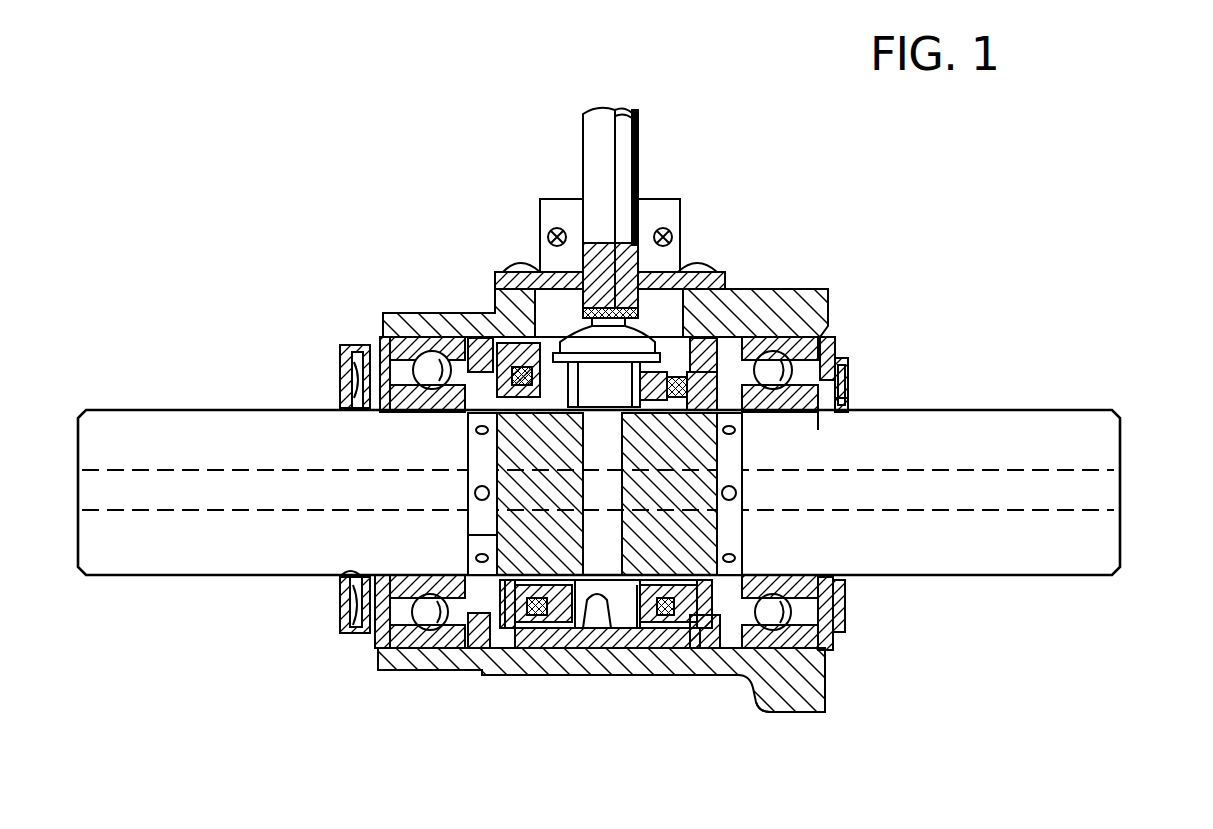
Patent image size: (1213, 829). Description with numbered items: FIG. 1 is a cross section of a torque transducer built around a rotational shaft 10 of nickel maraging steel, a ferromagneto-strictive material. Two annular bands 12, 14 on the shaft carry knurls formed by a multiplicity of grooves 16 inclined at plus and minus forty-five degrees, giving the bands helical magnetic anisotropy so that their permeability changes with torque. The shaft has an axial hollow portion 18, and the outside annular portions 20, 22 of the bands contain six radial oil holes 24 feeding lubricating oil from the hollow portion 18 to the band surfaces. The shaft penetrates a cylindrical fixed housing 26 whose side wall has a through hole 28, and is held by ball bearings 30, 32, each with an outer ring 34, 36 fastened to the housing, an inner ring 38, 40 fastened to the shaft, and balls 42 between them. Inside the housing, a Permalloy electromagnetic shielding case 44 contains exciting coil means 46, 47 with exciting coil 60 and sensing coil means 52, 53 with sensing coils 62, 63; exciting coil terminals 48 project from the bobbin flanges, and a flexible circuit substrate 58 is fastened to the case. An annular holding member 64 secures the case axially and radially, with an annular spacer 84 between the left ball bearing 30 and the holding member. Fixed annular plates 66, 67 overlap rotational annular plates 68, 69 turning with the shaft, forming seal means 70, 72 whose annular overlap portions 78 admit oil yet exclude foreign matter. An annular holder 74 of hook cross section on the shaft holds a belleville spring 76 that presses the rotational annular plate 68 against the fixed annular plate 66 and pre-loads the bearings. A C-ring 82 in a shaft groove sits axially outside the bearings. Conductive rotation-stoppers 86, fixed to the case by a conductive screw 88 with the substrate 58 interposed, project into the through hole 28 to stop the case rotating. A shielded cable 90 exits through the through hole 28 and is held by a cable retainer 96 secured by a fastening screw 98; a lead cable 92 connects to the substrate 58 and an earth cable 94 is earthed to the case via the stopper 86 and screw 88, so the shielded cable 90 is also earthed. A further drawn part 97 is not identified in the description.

The rotational shaft 10 is at (1033, 576).
The annular band 12 is at (440, 466).
The annular band 14 is at (825, 497).
The grooves 16 is at (500, 463).
The hollow portion 18 is at (1057, 478).
The annular portion 20 is at (470, 535).
The annular portion 22 is at (730, 533).
The oil holes 24 is at (820, 490).
The fixed housing 26 is at (783, 292).
The through hole 28 is at (690, 327).
The ball bearing 30 is at (407, 569).
The ball bearing 32 is at (732, 653).
The outer ring 34 is at (423, 643).
The outer ring 36 is at (781, 652).
The inner ring 38 is at (380, 670).
The inner ring 40 is at (823, 670).
The balls 42 is at (403, 650).
The electromagnetic shielding case 44 is at (813, 310).
The exciting coil means 46 is at (541, 570).
The exciting coil means 47 is at (612, 630).
The exciting coil terminals 48 is at (490, 303).
The sensing coil means 52 is at (535, 625).
The sensing coil means 53 is at (672, 620).
The flexible circuit substrate 58 is at (493, 272).
The exciting coil 60 is at (585, 630).
The sensing coil 62 is at (560, 625).
The sensing coil 63 is at (850, 400).
The annular holding member 64 is at (478, 305).
The fixed annular plate 66 is at (377, 643).
The fixed annular plate 67 is at (833, 645).
The rotational annular plate 68 is at (357, 572).
The rotational annular plate 69 is at (845, 605).
The seal means 70 is at (384, 338).
The seal means 72 is at (836, 345).
The annular holder 74 is at (350, 635).
The belleville spring 76 is at (340, 607).
The annular overlap portions 78 is at (377, 347).
The C-ring 82 is at (378, 414).
The annular spacer 84 is at (380, 330).
The rotation-stoppers 86 is at (683, 317).
The screw 88 is at (712, 300).
The shielded cable 90 is at (640, 124).
The lead cable 92 is at (538, 248).
The earth cable 94 is at (667, 303).
The cable retainer 96 is at (561, 204).
The pipe insert 97 is at (607, 243).
The fastening screw 98 is at (550, 229).